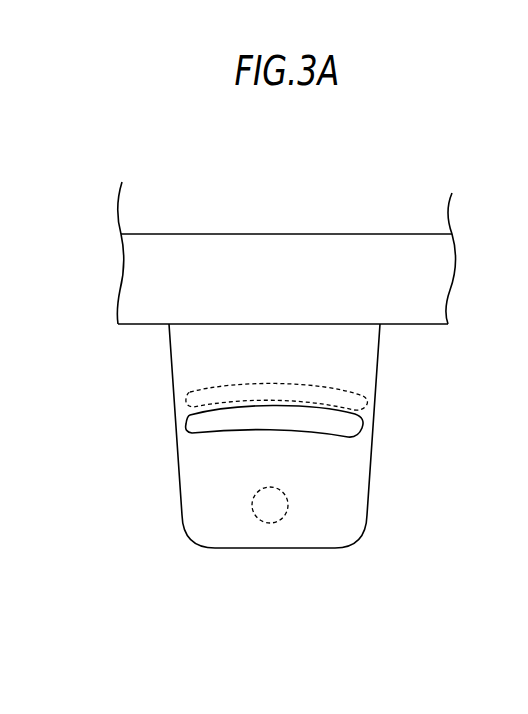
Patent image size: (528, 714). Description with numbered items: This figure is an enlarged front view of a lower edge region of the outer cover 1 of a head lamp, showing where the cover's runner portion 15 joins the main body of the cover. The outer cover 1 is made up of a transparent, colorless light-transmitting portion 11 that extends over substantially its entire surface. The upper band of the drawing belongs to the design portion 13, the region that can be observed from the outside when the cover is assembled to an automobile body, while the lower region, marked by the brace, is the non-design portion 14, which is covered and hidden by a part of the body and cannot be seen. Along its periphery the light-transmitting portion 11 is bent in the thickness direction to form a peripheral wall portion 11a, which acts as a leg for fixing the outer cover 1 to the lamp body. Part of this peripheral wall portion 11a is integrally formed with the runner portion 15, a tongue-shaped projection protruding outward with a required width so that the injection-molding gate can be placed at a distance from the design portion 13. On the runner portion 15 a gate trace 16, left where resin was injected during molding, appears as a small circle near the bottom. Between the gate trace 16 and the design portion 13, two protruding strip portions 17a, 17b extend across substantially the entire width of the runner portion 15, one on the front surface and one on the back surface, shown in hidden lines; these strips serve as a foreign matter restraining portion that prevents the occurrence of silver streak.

The outer cover 1 is at (443, 172).
The light-transmitting portion 11 is at (437, 214).
The peripheral wall portion 11a is at (311, 301).
The design portion 13 is at (85, 142).
The non-design portion 14 is at (90, 238).
The runner portion 15 is at (367, 520).
The gate trace 16 is at (262, 522).
The protruding strip portion 17a is at (362, 428).
The protruding strip portion 17b is at (368, 402).